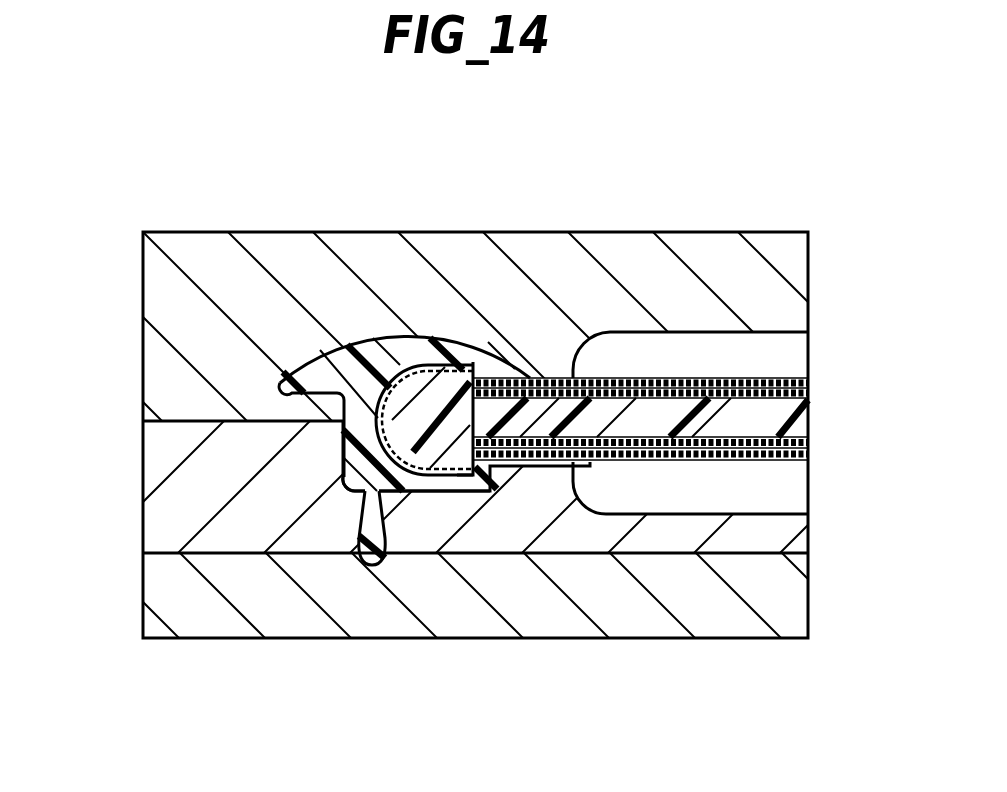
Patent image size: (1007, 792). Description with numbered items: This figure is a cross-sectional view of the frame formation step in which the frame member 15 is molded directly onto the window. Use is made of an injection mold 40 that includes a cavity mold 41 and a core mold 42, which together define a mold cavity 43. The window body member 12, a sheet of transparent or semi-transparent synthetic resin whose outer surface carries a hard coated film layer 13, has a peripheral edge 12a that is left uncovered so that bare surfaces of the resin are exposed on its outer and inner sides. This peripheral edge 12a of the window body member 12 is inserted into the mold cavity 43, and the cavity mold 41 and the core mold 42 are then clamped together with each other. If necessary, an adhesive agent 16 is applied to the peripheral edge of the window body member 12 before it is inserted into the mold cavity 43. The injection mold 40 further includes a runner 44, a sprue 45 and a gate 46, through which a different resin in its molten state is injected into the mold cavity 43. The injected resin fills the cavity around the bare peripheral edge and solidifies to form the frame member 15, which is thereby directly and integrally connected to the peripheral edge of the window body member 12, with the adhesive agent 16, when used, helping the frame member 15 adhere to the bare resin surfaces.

The injection mold 40 is at (500, 187).
The cavity mold 41 is at (156, 293).
The core mold 42 is at (157, 490).
The mold cavity 43 is at (347, 343).
The frame member 15 is at (372, 347).
The adhesive agent 16 is at (445, 392).
The peripheral edge 12a is at (470, 367).
The window body member 12 is at (782, 418).
The hard coated film layer 13 is at (670, 419).
The runner 44 is at (370, 568).
The sprue 45 is at (360, 514).
The gate 46 is at (386, 492).